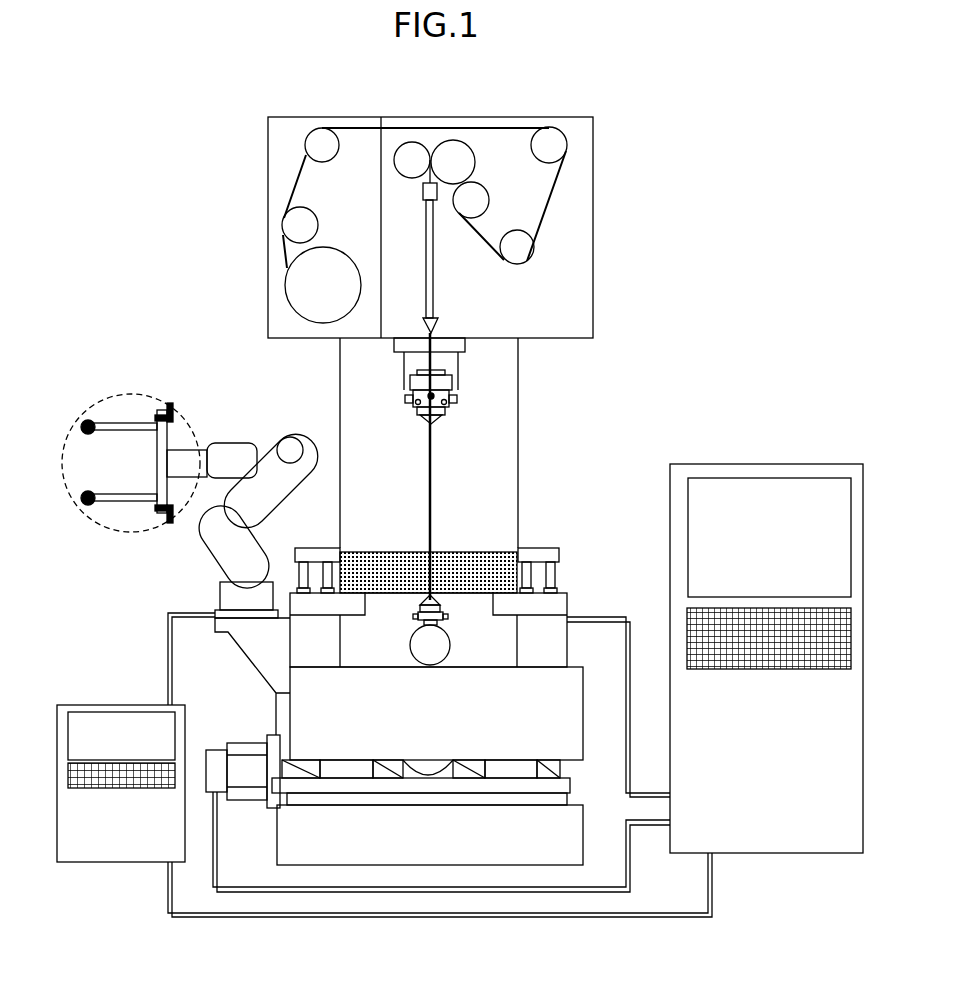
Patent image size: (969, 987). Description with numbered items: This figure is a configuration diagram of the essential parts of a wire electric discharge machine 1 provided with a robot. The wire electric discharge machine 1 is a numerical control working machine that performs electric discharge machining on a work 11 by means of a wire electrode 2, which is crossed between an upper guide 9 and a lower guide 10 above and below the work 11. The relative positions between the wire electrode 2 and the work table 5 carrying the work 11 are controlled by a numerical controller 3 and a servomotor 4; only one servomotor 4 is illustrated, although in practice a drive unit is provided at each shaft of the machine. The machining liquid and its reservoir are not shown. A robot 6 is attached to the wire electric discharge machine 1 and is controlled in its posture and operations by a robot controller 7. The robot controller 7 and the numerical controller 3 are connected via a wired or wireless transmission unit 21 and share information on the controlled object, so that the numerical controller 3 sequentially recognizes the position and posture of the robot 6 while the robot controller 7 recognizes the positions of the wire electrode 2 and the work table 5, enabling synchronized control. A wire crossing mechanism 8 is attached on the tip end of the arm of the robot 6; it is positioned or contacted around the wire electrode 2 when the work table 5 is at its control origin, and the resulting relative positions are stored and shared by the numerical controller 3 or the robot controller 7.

The wire electric discharge machine 1 is at (593, 150).
The wire electrode 2 is at (435, 488).
The numerical controller 3 is at (805, 464).
The servomotor 4 is at (244, 744).
The work table 5 is at (567, 580).
The robot 6 is at (253, 443).
The robot controller 7 is at (92, 862).
The wire crossing mechanism 8 is at (110, 397).
The upper guide 9 is at (445, 415).
The lower guide 10 is at (426, 602).
The work 11 is at (514, 530).
The transmission unit 21 is at (560, 917).